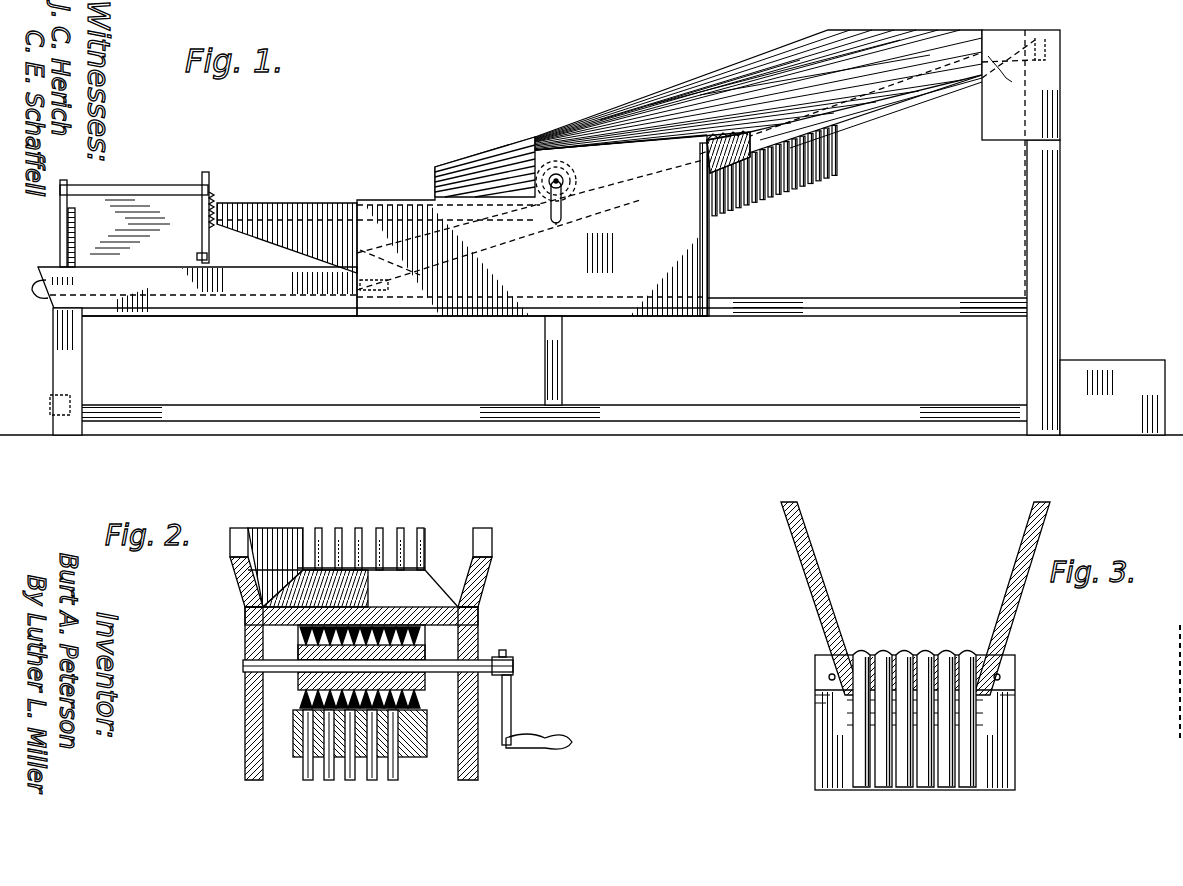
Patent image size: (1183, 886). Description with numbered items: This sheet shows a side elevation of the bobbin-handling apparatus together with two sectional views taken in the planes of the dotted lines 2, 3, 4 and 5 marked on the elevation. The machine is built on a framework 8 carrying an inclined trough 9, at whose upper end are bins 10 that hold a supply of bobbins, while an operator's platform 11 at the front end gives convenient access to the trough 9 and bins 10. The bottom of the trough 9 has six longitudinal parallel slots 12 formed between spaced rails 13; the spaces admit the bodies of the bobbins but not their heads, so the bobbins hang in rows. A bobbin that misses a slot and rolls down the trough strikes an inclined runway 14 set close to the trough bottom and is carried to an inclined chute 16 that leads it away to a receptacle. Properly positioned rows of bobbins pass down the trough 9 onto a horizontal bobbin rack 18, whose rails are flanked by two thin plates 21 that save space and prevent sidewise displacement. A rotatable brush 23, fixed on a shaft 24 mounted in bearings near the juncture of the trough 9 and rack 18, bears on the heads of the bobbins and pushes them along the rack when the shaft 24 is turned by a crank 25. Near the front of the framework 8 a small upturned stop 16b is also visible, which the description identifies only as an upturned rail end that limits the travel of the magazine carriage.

In FIG. 1, the dotted line 2 2 is at (556, 108).
In FIG. 1, the dotted line 3 3 is at (752, 50).
In FIG. 1, the dotted line 4 4 is at (353, 172).
In FIG. 1, the dotted line 5 5 is at (438, 52).
In FIG. 1, the framework 8 is at (60, 357).
In FIG. 1, the inclined trough 9 is at (895, 107).
In FIG. 3, the inclined trough 9 is at (915, 598).
In FIG. 1, the bins 10 is at (1021, 165).
In FIG. 1, the operator's platform 11 is at (1105, 360).
In FIG. 2, the longitudinal parallel slots 12 is at (420, 528).
In FIG. 1, the rails 13 is at (705, 152).
In FIG. 2, the rails 13 is at (398, 543).
In FIG. 3, the rails 13 is at (915, 722).
In FIG. 1, the inclined runway 14 is at (612, 140).
In FIG. 2, the inclined runway 14 is at (422, 593).
In FIG. 1, the inclined chute 16 is at (492, 175).
In FIG. 1, the bracket 16b is at (38, 292).
In FIG. 1, the horizontal bobbin rack 18 is at (395, 200).
In FIG. 1, the thin plates 21 is at (320, 225).
In FIG. 1, the rotatable brush 23 is at (575, 181).
In FIG. 2, the rotatable brush 23 is at (430, 650).
In FIG. 1, the shaft 24 is at (556, 176).
In FIG. 2, the shaft 24 is at (243, 663).
In FIG. 1, the crank 25 is at (561, 210).
In FIG. 2, the crank 25 is at (512, 735).